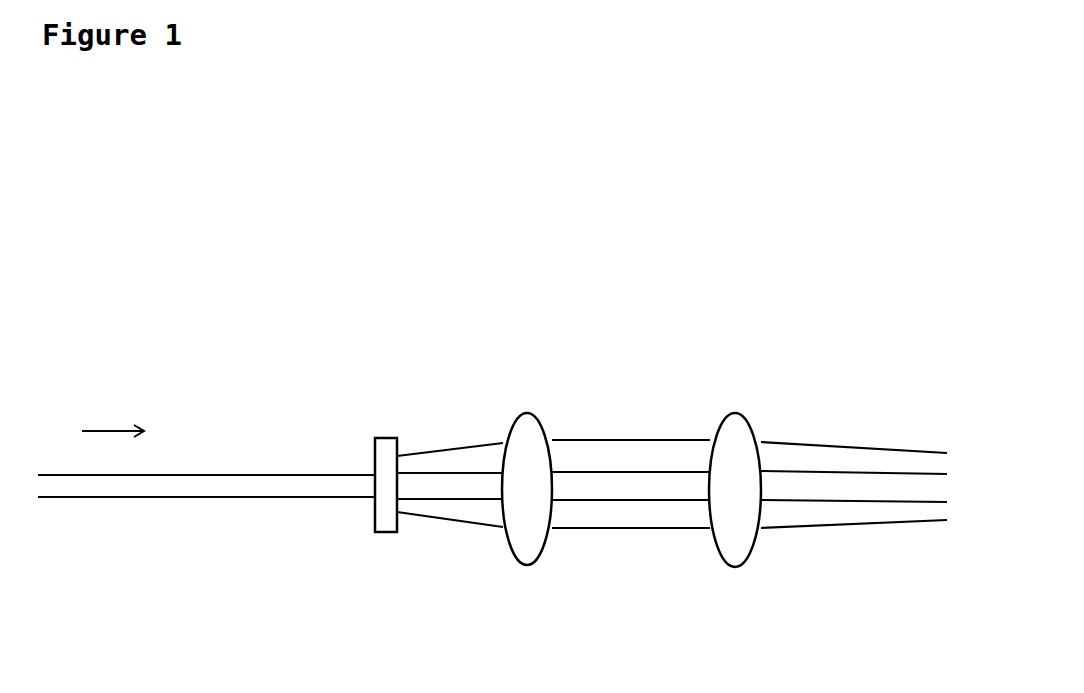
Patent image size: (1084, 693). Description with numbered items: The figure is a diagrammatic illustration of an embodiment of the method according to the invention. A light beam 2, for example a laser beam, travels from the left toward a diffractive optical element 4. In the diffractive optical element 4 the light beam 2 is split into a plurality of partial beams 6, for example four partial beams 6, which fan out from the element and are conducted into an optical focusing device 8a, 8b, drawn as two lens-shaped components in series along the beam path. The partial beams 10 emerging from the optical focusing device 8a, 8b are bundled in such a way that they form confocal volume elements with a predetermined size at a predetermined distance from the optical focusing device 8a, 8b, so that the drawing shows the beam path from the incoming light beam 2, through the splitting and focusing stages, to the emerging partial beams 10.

The light beam 2 is at (174, 517).
The diffractive optical element 4 is at (384, 532).
The partial beams 6 is at (460, 440).
The optical focusing device 8a is at (542, 565).
The optical focusing device 8b is at (760, 553).
The partial beams 10 is at (887, 443).